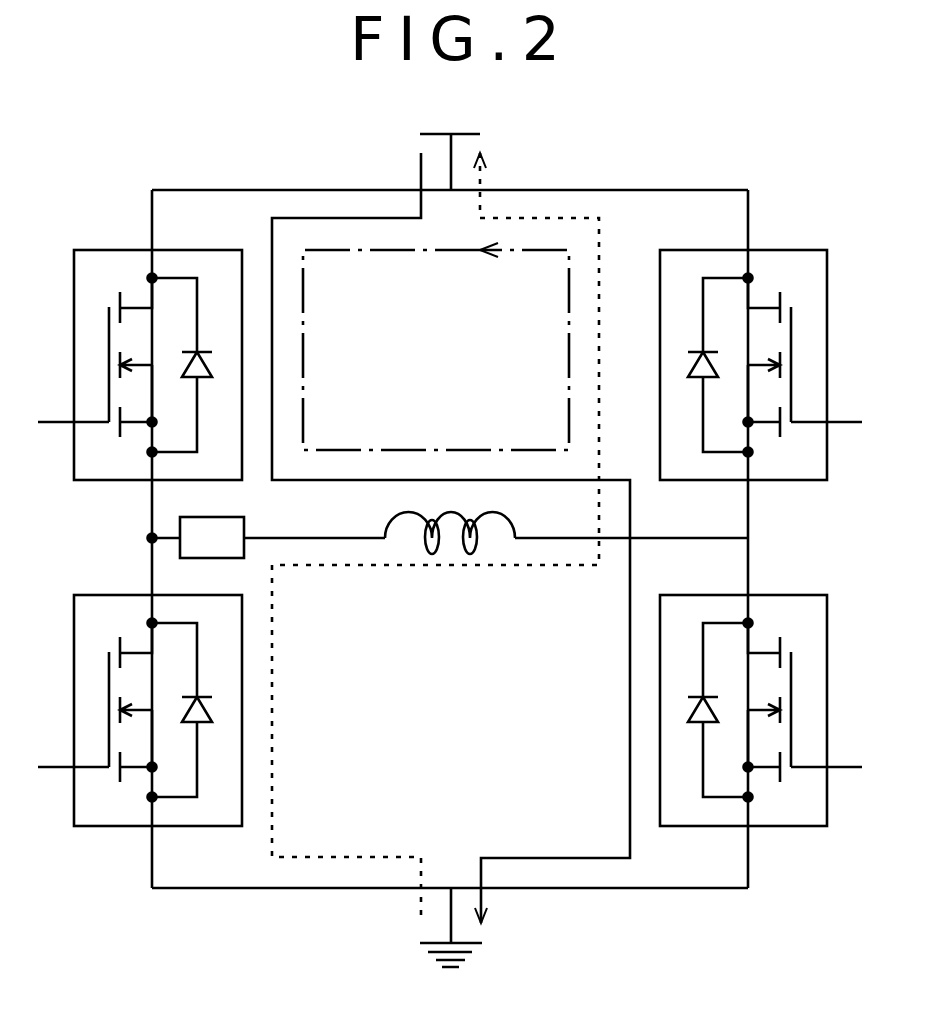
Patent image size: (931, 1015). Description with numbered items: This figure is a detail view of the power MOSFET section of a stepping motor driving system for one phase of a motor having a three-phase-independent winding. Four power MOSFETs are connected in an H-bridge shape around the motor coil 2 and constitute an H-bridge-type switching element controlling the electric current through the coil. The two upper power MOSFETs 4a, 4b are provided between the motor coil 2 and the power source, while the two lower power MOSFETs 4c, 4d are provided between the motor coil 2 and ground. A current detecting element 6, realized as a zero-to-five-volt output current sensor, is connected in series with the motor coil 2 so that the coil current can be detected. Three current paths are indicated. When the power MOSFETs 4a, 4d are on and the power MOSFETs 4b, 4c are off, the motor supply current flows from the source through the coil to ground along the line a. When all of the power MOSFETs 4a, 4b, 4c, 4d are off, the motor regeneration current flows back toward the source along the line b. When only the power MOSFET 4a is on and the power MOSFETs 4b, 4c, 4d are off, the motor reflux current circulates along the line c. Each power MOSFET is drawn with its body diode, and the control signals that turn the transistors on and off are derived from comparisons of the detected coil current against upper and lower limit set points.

The motor coil 2 is at (452, 512).
The power MOSFET 4a is at (103, 250).
The power MOSFET 4b is at (797, 250).
The power MOSFET 4c is at (103, 826).
The power MOSFET 4d is at (797, 826).
The current detecting element 6 is at (245, 525).
The line a is at (570, 858).
The line b is at (556, 218).
The line c is at (569, 345).